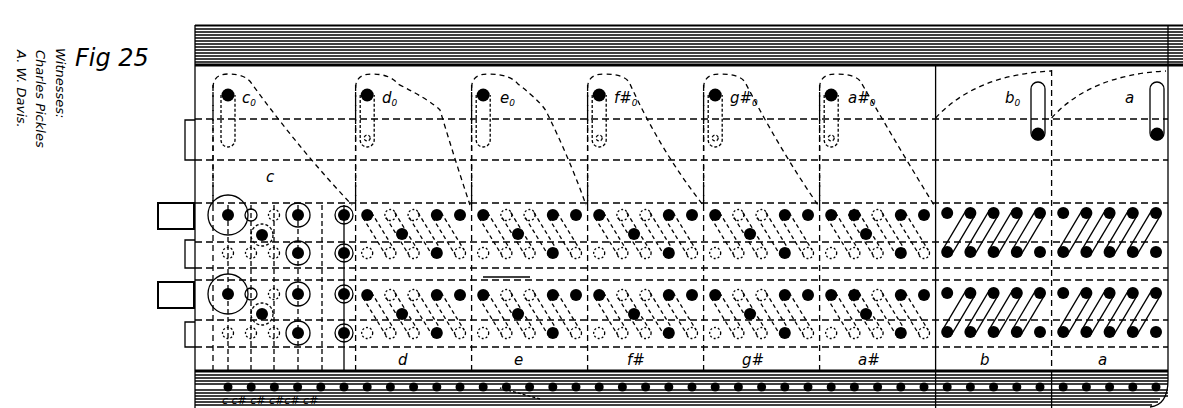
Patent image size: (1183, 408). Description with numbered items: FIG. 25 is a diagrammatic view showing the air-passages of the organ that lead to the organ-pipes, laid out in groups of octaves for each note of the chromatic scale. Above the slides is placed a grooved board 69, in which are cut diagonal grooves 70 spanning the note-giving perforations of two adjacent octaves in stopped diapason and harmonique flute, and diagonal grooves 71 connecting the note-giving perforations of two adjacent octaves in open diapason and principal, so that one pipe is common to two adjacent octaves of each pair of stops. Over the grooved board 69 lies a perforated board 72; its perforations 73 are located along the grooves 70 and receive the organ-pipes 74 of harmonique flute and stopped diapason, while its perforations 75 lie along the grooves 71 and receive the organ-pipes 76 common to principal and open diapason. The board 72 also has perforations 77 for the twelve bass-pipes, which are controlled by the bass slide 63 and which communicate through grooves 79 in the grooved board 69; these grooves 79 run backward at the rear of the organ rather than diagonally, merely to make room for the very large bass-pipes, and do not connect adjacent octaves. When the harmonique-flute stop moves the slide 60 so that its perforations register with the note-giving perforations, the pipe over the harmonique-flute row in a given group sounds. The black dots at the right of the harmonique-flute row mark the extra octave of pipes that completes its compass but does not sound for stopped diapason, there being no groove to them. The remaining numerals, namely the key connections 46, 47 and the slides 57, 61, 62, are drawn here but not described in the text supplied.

The key connection 46 is at (548, 278).
The key connection 47 is at (505, 395).
The stopped diapason channel 57 is at (185, 325).
The slide 60 is at (586, 301).
The open diapason channel 61 is at (185, 262).
The principal channel 62 is at (611, 222).
The slide 63 is at (185, 157).
The grooved board 69 is at (1051, 254).
The diagonal grooves 70 is at (1090, 313).
The diagonal grooves 71 is at (420, 215).
The perforated board 72 is at (645, 255).
The perforations 73 is at (862, 313).
The organ-pipes 74 is at (308, 287).
The perforations 75 is at (836, 215).
The organ-pipes 76 is at (244, 283).
The perforations 77 is at (361, 96).
The grooves 79 is at (374, 131).